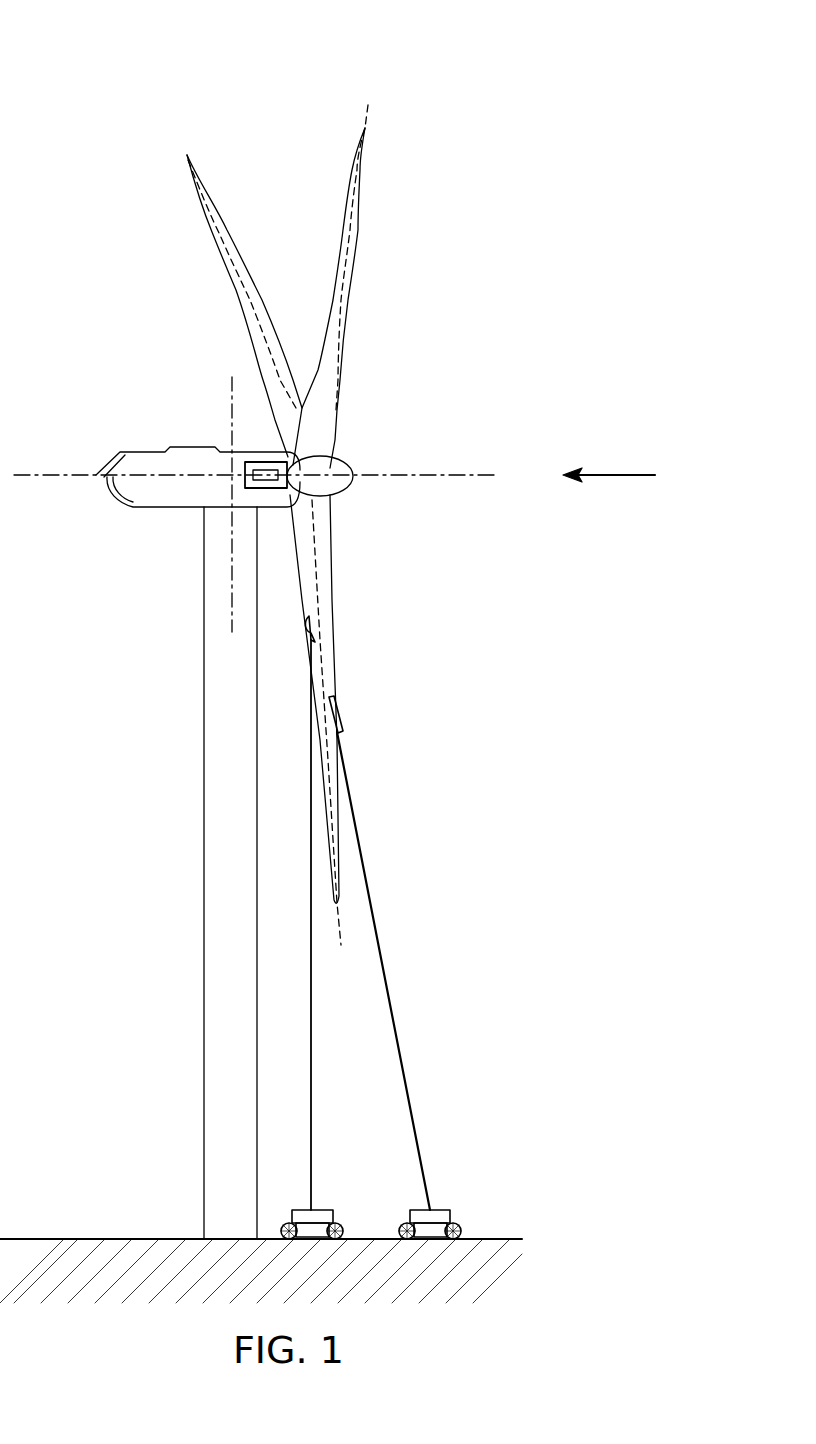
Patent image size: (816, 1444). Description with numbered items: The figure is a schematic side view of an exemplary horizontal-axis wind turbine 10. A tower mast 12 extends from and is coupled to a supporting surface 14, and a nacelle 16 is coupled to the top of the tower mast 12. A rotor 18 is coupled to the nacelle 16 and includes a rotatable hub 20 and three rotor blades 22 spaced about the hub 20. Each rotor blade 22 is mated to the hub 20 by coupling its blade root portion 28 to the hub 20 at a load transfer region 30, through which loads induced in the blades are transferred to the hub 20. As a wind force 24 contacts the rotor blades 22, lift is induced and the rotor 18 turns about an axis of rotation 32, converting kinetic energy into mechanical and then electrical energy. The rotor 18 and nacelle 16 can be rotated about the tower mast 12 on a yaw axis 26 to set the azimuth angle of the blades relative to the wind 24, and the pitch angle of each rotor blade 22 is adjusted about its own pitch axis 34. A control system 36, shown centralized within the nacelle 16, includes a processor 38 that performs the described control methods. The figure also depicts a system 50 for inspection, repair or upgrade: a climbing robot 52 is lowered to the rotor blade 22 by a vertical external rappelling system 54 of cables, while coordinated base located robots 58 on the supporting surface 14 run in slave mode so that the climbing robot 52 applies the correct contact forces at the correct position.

The wind turbine 10 is at (397, 60).
The tower mast 12 is at (203, 1092).
The supporting surface 14 is at (112, 1238).
The nacelle 16 is at (133, 508).
The rotor 18 is at (348, 326).
The rotatable hub 20 is at (350, 465).
The rotor blade 22 is at (205, 180).
The wind force 24 is at (612, 472).
The yaw axis 26 is at (232, 383).
The blade root portion 28 is at (340, 392).
The load transfer region 30 is at (326, 440).
The axis of rotation 32 is at (468, 472).
The pitch axis 34 is at (187, 152).
The control system 36 is at (245, 488).
The processor 38 is at (262, 462).
The system 50 is at (310, 633).
The climbing robot 52 is at (345, 712).
The rappelling system 54 is at (386, 990).
The base located robot 58 is at (330, 1210).